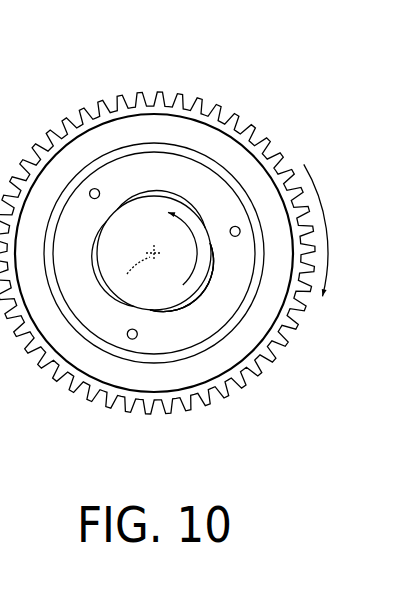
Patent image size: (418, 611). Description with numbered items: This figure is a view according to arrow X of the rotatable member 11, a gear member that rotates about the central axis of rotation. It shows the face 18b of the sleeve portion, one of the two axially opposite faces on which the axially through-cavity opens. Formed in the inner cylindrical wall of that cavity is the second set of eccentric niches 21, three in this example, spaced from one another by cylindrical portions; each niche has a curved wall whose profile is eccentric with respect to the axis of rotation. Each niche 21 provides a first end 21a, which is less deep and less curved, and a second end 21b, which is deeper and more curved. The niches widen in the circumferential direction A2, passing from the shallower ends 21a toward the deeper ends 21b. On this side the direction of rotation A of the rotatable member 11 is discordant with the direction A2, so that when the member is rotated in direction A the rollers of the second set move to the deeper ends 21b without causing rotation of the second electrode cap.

The rotatable member 11 is at (48, 118).
The face of the sleeve portion 18b is at (187, 177).
The eccentric niches 21 is at (160, 190).
The first end of niche 21a is at (190, 300).
The second end of niche 21b is at (213, 275).
The circumferential direction A2 is at (169, 245).
The arrow X is at (139, 269).
The direction of rotation A is at (323, 240).